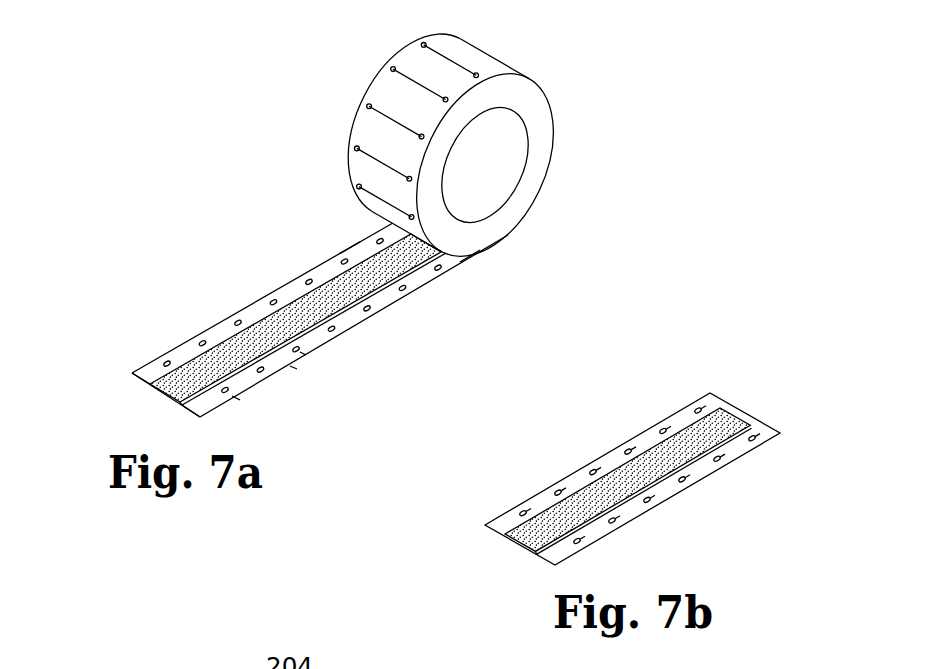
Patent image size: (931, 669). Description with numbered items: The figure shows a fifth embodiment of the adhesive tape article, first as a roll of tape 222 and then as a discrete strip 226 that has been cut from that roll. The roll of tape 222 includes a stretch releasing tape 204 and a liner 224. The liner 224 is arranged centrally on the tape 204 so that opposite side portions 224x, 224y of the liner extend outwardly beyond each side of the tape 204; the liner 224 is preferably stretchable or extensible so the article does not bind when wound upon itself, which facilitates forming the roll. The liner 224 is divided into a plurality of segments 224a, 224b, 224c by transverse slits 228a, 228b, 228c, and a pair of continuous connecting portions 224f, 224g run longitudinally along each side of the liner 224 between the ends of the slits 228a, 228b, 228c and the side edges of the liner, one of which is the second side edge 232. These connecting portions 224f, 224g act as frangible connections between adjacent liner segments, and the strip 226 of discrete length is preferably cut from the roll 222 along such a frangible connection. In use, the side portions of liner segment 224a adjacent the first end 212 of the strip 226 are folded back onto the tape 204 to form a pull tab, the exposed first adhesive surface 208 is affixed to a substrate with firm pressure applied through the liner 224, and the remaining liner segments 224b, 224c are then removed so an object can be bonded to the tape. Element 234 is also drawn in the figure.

In FIG. 7A, the roll of tape 222 is at (503, 62).
In FIG. 7A, the liner 224 is at (300, 324).
In FIG. 7B, the liner 224 is at (632, 444).
In FIG. 7A, the liner segment 224a is at (208, 405).
In FIG. 7A, the liner segment 224b is at (242, 383).
In FIG. 7A, the liner segment 224c is at (280, 362).
In FIG. 7A, the connecting portion 224f is at (393, 308).
In FIG. 7A, the connecting portion 224g is at (315, 272).
In FIG. 7A, the side portion of the liner 224x is at (142, 380).
In FIG. 7A, the side portion of the liner 224y is at (185, 410).
In FIG. 7A, the transverse slit 228a is at (245, 397).
In FIG. 7A, the transverse slit 228b is at (297, 368).
In FIG. 7A, the transverse slit 228c is at (303, 353).
In FIG. 7A, the second side edge of the liner 232 is at (470, 258).
In FIG. 7A, the liner margin 234 is at (355, 247).
In FIG. 7A, the stretch releasing tape 204 is at (220, 343).
In FIG. 7B, the stretch releasing tape 204 is at (628, 466).
In FIG. 7B, the first adhesive surface 208 is at (583, 507).
In FIG. 7B, the first end of the strip 212 is at (518, 548).
In FIG. 7B, the strip 226 is at (633, 425).